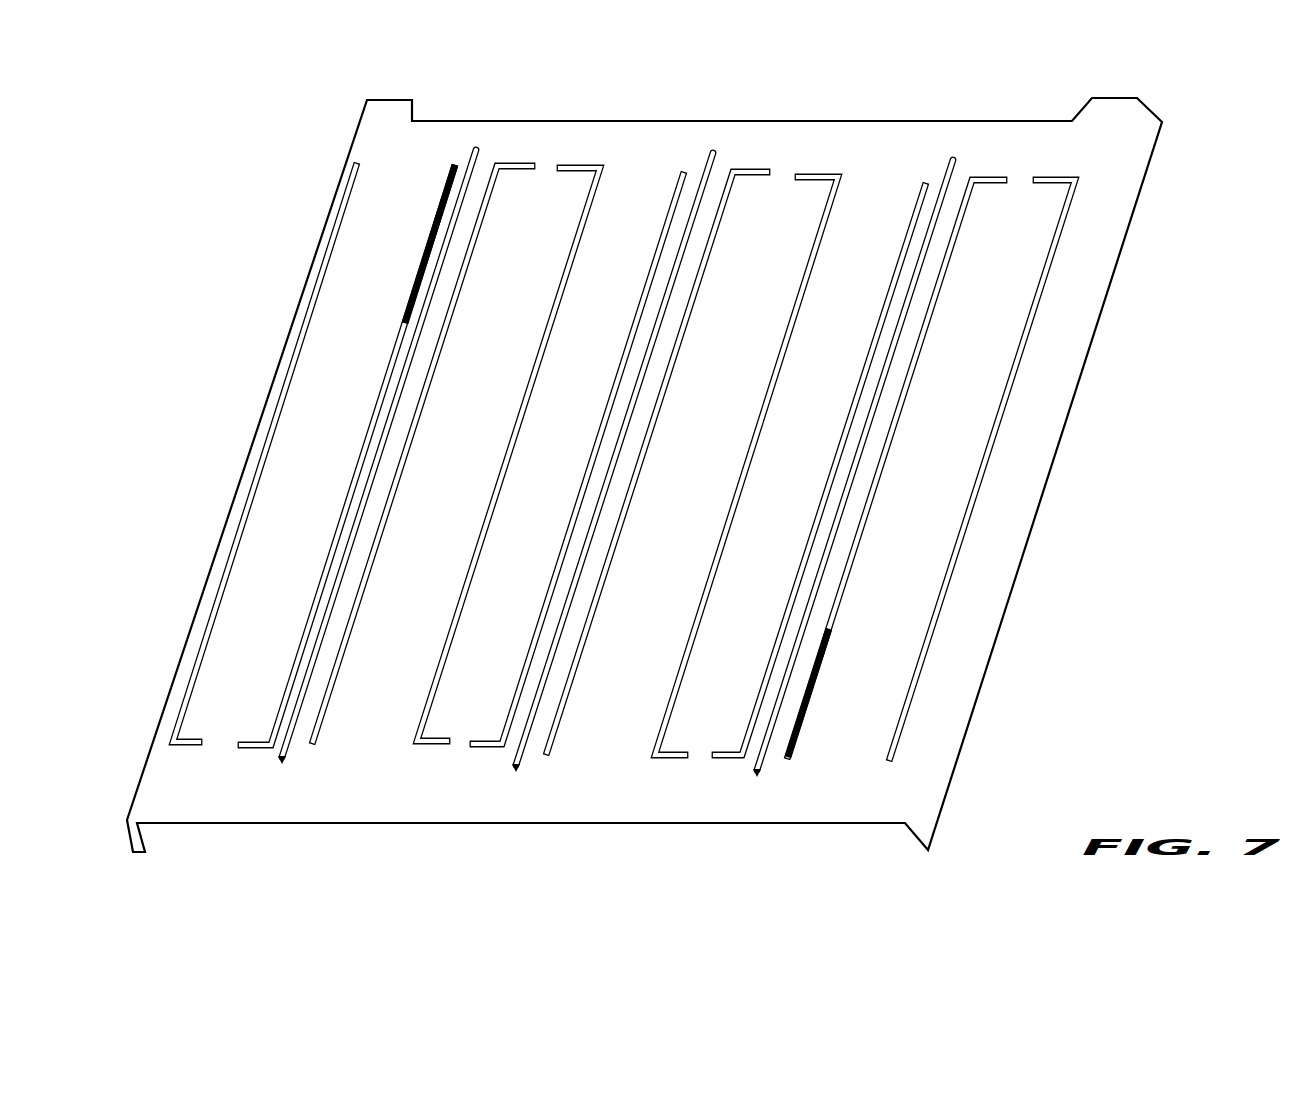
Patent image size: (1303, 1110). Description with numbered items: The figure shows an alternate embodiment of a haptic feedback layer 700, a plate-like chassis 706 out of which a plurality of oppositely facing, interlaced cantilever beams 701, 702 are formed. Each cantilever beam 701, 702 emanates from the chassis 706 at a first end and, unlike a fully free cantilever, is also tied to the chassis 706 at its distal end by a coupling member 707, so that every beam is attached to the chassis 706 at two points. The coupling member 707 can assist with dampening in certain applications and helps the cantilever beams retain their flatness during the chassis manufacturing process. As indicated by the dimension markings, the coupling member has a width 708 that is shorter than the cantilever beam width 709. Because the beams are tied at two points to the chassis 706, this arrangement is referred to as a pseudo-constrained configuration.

The haptic feedback layer 700 is at (172, 337).
The cantilever beam 701 is at (226, 677).
The cantilever beam 702 is at (362, 710).
The chassis 706 is at (622, 797).
The coupling member 707 is at (535, 173).
The coupling member width 708 is at (597, 138).
The cantilever beam width 709 is at (504, 433).